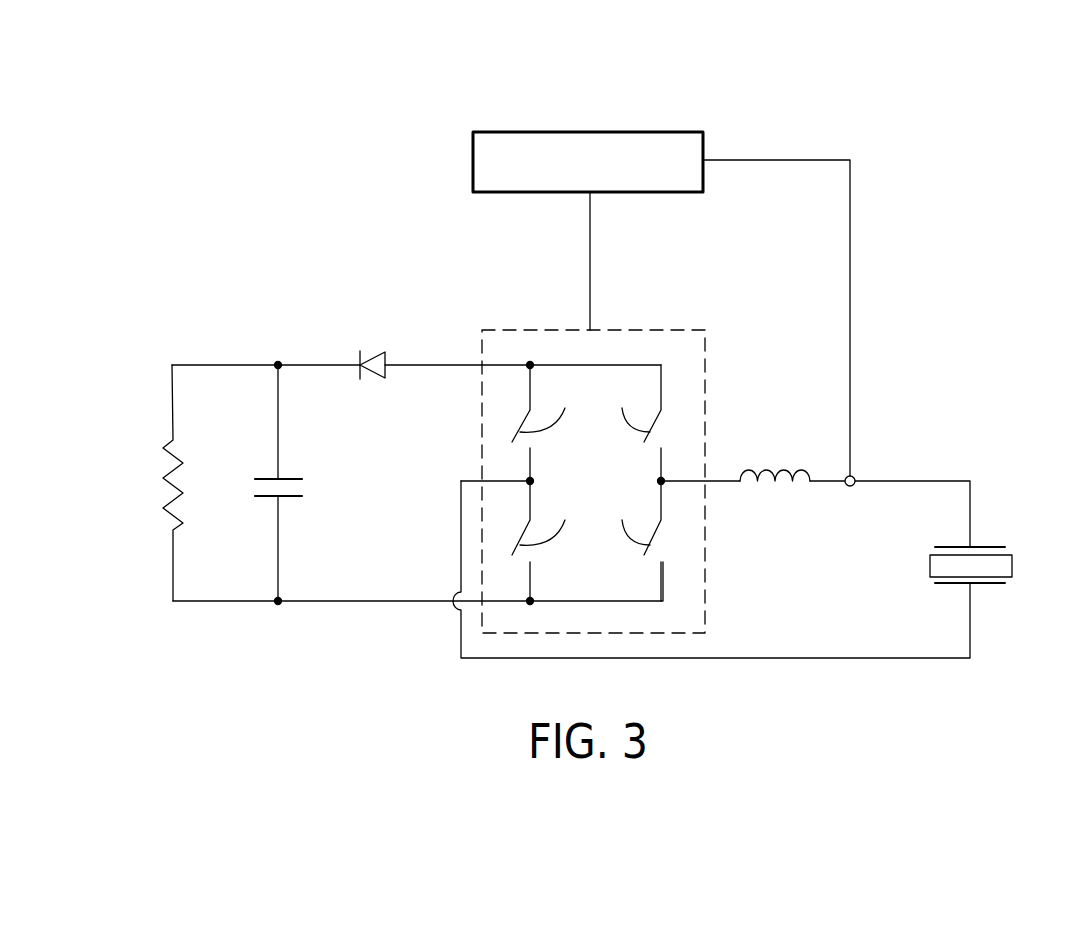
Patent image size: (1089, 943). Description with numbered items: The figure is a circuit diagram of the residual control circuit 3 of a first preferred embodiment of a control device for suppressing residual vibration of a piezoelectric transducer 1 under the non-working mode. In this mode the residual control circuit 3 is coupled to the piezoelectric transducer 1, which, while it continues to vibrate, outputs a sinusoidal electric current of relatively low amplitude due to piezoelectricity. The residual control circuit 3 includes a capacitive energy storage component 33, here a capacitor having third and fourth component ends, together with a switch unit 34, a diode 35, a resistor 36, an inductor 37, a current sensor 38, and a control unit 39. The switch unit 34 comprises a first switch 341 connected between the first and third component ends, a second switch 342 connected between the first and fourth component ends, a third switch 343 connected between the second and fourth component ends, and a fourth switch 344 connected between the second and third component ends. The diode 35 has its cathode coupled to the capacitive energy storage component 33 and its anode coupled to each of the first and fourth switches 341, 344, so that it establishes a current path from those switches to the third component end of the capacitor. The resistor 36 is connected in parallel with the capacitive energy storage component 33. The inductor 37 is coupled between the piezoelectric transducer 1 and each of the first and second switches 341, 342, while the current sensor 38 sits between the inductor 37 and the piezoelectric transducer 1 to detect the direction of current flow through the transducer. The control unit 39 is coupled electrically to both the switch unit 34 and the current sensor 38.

The residual control circuit 3 is at (898, 123).
The piezoelectric transducer 1 is at (983, 545).
The capacitive energy storage component 33 is at (290, 478).
The switch unit 34 is at (705, 385).
The first switch 341 is at (631, 423).
The second switch 342 is at (631, 541).
The third switch 343 is at (545, 541).
The fourth switch 344 is at (545, 423).
The diode 35 is at (373, 350).
The resistor 36 is at (165, 465).
The inductor 37 is at (767, 485).
The current sensor 38 is at (853, 488).
The control unit 39 is at (705, 145).